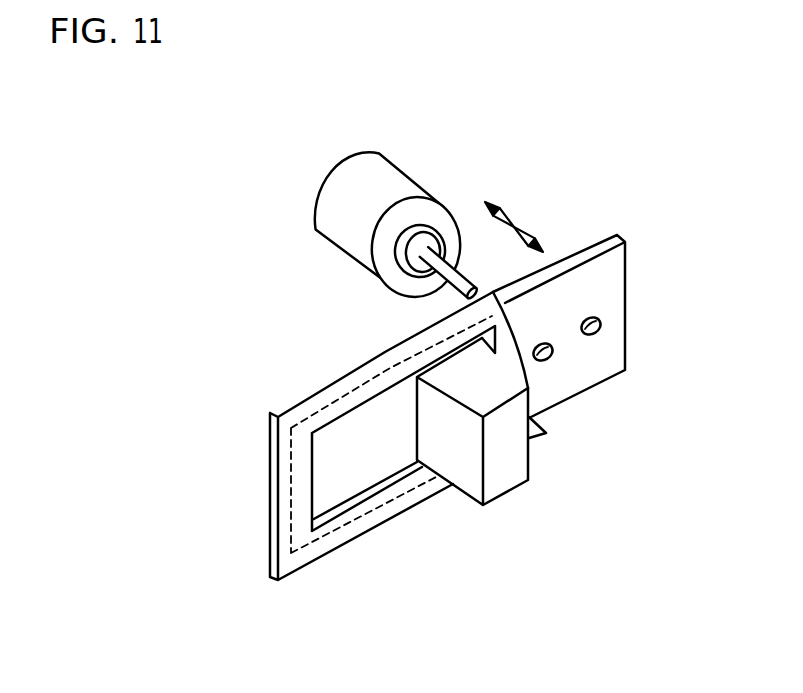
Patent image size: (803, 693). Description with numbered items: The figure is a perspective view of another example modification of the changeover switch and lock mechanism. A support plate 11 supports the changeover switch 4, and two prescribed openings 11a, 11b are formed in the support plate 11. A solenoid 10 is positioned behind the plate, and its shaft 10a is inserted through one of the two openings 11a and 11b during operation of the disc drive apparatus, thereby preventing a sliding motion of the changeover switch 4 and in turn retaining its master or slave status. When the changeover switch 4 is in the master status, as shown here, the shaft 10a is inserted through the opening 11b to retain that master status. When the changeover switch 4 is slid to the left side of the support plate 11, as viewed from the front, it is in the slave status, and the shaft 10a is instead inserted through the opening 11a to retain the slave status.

The solenoid 10 is at (353, 230).
The shaft 10a is at (455, 282).
The support plate 11 is at (613, 292).
The opening 11a is at (593, 334).
The opening 11b is at (545, 361).
The changeover switch 4 is at (507, 462).